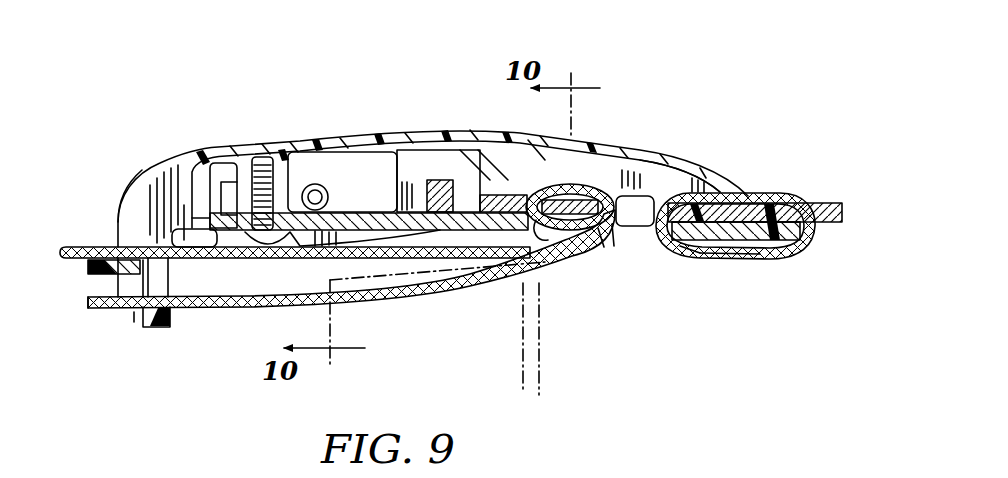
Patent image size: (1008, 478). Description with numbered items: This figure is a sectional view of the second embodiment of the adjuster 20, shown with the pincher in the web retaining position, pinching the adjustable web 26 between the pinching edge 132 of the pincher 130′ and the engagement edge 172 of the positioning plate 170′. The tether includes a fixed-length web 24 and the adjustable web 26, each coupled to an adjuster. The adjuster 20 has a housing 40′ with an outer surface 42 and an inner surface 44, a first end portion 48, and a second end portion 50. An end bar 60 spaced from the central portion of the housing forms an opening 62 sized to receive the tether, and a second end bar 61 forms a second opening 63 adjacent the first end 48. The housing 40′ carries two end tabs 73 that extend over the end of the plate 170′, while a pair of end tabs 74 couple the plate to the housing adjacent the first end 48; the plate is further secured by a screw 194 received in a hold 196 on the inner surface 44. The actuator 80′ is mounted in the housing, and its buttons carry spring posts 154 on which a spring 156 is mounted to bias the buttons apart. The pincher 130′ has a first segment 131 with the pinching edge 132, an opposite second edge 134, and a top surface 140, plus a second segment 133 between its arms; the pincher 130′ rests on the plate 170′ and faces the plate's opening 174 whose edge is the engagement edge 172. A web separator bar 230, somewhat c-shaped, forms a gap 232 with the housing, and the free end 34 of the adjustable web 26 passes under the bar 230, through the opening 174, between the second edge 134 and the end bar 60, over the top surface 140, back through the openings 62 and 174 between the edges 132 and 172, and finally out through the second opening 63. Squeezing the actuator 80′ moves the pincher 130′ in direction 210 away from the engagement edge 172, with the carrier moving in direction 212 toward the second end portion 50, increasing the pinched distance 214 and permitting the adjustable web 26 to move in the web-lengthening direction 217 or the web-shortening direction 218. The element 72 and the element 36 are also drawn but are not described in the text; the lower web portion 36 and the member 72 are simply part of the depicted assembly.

The adjuster 20 is at (667, 362).
The fixed-length web 24 is at (809, 200).
The adjustable web 26 is at (90, 313).
The free end 34 is at (72, 247).
The lower tube 36 is at (449, 298).
The housing 40′ is at (726, 140).
The outer surface 42 is at (307, 146).
The inner surface 44 is at (338, 156).
The first end portion 48 is at (117, 222).
The second end portion 50 is at (736, 232).
The end bar 60 is at (738, 212).
The second end bar 61 is at (106, 266).
The opening 62 is at (706, 192).
The second opening 63 is at (180, 241).
The ring lower wall 72 is at (752, 257).
The end tabs 73 is at (218, 238).
The end tabs 74 is at (736, 254).
The actuator 80′ is at (586, 216).
The pincher 130′ is at (456, 190).
The first segment 131 is at (578, 198).
The pinching edge 132 is at (500, 196).
The second segment 133 is at (470, 205).
The second edge 134 is at (673, 176).
The top surface 140 is at (538, 272).
The spring posts 154 is at (300, 180).
The spring 156 is at (323, 193).
The positioning plate 170′ is at (210, 222).
The engagement edge 172 is at (553, 160).
The opening 174 is at (647, 204).
The screw 194 is at (262, 158).
The hold 196 is at (278, 150).
The direction 210 is at (590, 25).
The direction 212 is at (260, 87).
The pinched distance 214 is at (500, 377).
The web-lengthening direction 217 is at (121, 317).
The web-shortening direction 218 is at (72, 270).
The web separator bar 230 is at (160, 328).
The gap 232 is at (114, 310).